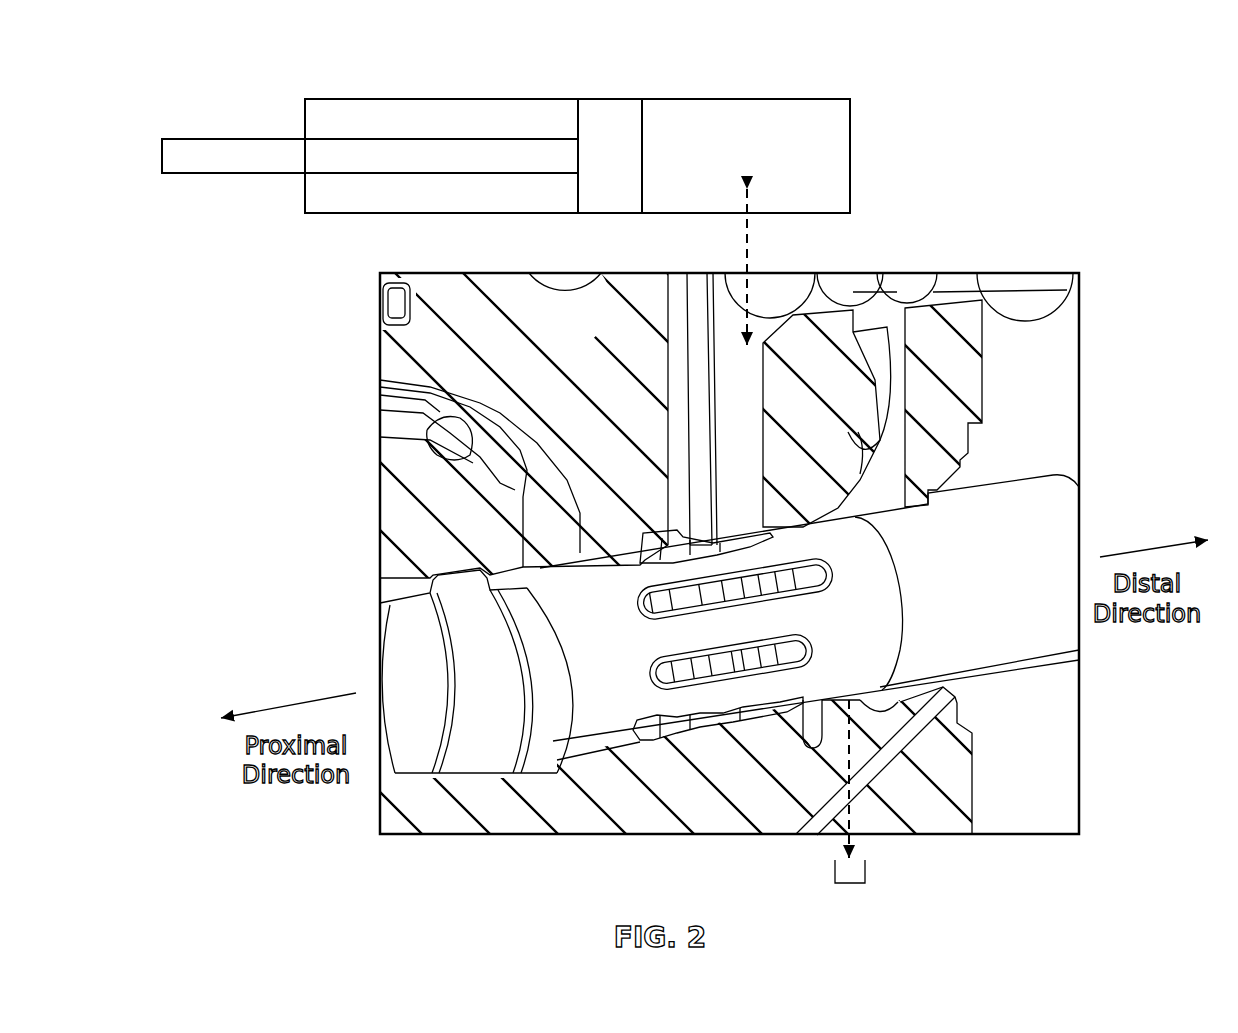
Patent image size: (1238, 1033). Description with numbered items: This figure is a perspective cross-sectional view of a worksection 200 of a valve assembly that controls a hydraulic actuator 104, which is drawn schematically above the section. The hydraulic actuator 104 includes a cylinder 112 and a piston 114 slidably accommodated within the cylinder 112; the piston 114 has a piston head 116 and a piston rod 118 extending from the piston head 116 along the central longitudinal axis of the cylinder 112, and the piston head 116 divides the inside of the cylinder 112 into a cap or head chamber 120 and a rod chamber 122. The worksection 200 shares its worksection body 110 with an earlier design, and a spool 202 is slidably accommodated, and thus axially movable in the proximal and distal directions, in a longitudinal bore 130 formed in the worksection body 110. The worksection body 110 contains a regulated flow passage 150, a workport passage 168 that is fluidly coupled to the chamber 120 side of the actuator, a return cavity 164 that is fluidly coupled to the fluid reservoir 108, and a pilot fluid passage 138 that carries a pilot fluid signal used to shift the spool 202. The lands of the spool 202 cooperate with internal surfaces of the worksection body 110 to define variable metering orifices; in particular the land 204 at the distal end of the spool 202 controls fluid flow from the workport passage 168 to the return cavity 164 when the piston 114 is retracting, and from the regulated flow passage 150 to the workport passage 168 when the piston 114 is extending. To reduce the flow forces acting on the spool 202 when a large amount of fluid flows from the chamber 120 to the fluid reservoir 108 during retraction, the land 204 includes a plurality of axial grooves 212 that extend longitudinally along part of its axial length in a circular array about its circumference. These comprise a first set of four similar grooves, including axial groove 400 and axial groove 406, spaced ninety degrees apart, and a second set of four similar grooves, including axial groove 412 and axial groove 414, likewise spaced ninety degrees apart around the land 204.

The hydraulic actuator 104 is at (315, 97).
The cylinder 112 is at (437, 99).
The piston 114 is at (222, 137).
The piston head 116 is at (610, 108).
The piston rod 118 is at (475, 139).
The chamber 120 is at (798, 122).
The chamber 122 is at (543, 122).
The regulated flow passage 150 is at (467, 425).
The axial groove 400 is at (677, 551).
The axial groove 414 is at (727, 595).
The workport passage 168 is at (747, 395).
The worksection 200 is at (383, 298).
The worksection body 110 is at (375, 350).
The longitudinal bore 130 is at (394, 610).
The spool 202 is at (1020, 488).
The land 204 is at (1046, 643).
The axial groove 412 is at (660, 725).
The axial grooves 212 is at (697, 737).
The axial groove 406 is at (728, 669).
The return cavity 164 is at (837, 724).
The pilot fluid passage 138 is at (922, 739).
The fluid reservoir 108 is at (850, 883).